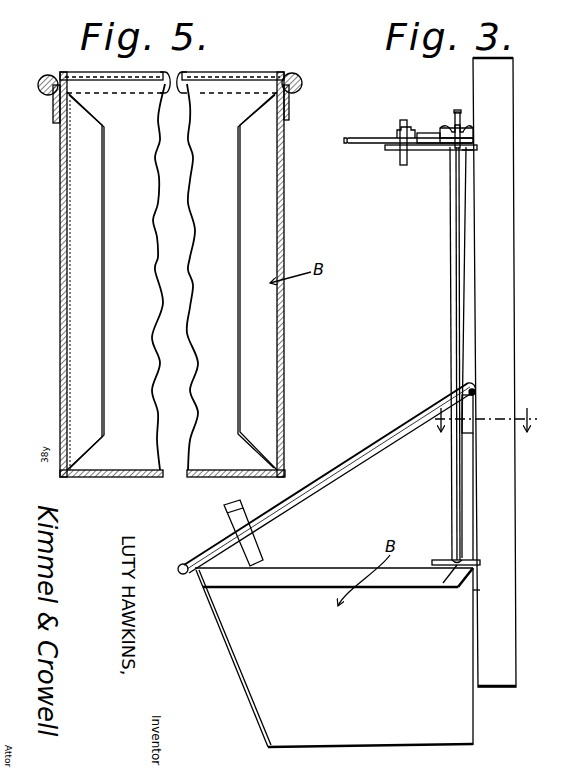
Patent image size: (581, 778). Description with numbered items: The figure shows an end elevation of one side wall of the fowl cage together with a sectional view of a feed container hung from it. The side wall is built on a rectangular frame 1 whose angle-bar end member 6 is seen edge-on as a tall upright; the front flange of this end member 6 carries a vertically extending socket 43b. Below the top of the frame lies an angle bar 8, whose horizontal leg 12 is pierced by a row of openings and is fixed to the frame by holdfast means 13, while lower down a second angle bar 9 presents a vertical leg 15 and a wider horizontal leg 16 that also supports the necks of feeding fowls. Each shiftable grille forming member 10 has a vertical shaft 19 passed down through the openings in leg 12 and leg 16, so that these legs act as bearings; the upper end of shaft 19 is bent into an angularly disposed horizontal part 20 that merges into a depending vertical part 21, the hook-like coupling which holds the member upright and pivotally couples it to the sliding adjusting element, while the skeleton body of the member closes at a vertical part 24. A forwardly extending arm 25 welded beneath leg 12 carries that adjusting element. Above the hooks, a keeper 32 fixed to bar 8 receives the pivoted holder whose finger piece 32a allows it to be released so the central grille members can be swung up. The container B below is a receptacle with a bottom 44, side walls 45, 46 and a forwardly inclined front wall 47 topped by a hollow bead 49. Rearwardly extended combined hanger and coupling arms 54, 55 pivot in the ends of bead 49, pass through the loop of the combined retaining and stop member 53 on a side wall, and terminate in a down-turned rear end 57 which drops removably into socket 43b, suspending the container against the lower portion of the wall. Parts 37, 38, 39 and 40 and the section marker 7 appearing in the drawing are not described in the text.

In FIG. 3, the rectangular frame 1 is at (505, 290).
In FIG. 3, the end member 6 is at (505, 170).
In FIG. 3, the bar 8 is at (473, 156).
In FIG. 3, the bar 9 is at (440, 558).
In FIG. 3, the shiftable grille forming member 10 is at (452, 336).
In FIG. 3, the horizontal leg 12 is at (473, 143).
In FIG. 3, the holdfast means 13 is at (470, 129).
In FIG. 3, the vertical leg 15 is at (478, 582).
In FIG. 3, the horizontal leg 16 is at (457, 567).
In FIG. 3, the vertical shaft 19 is at (457, 245).
In FIG. 3, the horizontal part 20 is at (440, 108).
In FIG. 3, the depending vertical part 21 is at (402, 158).
In FIG. 3, the vertical part 24 is at (450, 288).
In FIG. 3, the arm 25 is at (400, 144).
In FIG. 3, the keeper 32 is at (462, 118).
In FIG. 3, the finger piece 32a is at (458, 112).
In FIG. 3, the clamp block 37 is at (385, 121).
In FIG. 3, the rod end 38 is at (366, 139).
In FIG. 3, the lower plate 39 is at (437, 150).
In FIG. 3, the bracket 40 is at (398, 133).
In FIG. 3, the socket 43b is at (473, 406).
In FIG. 5, the bottom 44 is at (138, 455).
In FIG. 5, the side wall 45 is at (283, 385).
In FIG. 5, the side wall 46 is at (62, 396).
In FIG. 3, the side wall 46 is at (458, 658).
In FIG. 5, the front wall 47 is at (113, 360).
In FIG. 3, the front wall 47 is at (580, 222).
In FIG. 5, the hollow bead 49 is at (262, 57).
In FIG. 3, the hollow bead 49 is at (184, 545).
In FIG. 3, the combined retaining and stop member 53 is at (228, 509).
In FIG. 5, the combined hanger and coupling arm 54 is at (301, 87).
In FIG. 5, the combined hanger and coupling arm 55 is at (42, 92).
In FIG. 3, the combined hanger and coupling arm 55 is at (366, 452).
In FIG. 3, the down-turned rear end 57 is at (476, 387).
In FIG. 3, the section line 7 is at (483, 434).